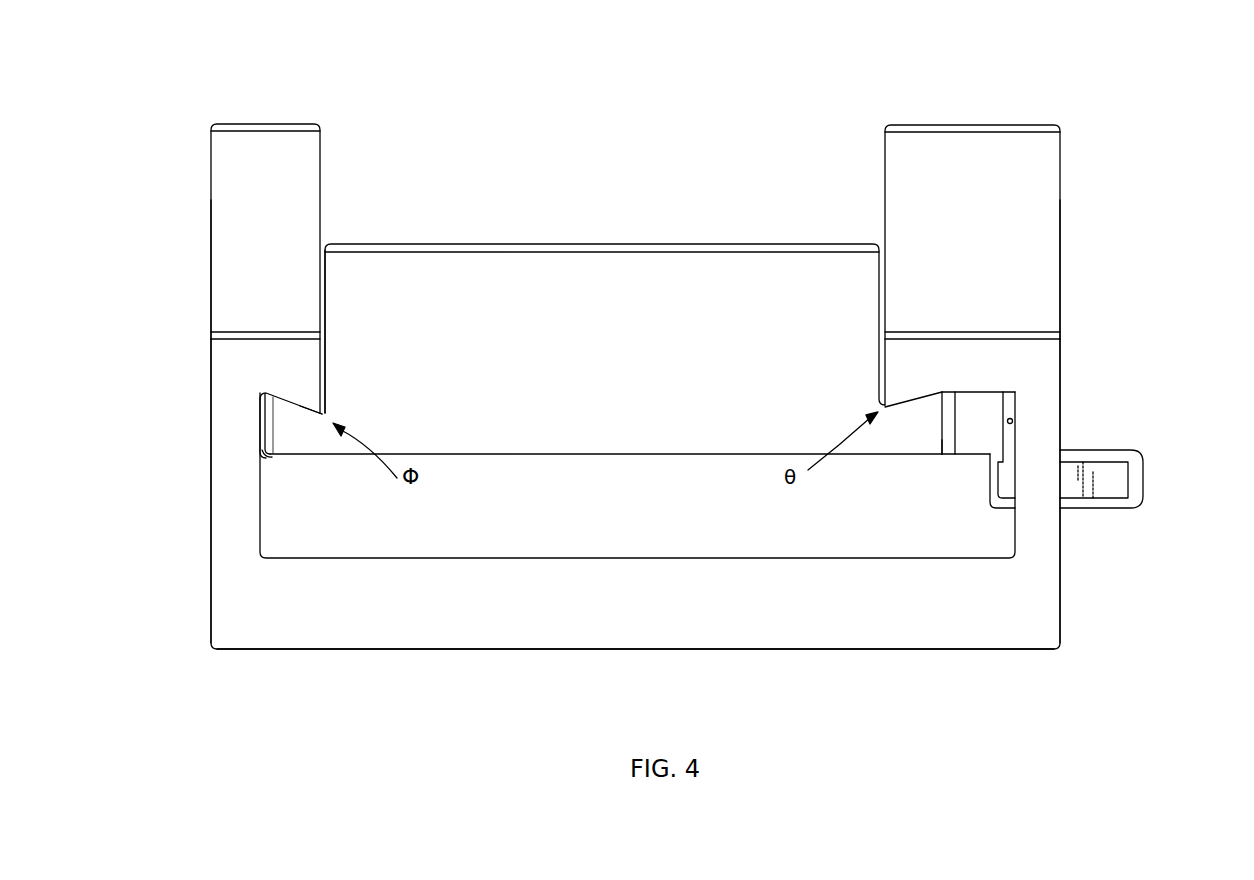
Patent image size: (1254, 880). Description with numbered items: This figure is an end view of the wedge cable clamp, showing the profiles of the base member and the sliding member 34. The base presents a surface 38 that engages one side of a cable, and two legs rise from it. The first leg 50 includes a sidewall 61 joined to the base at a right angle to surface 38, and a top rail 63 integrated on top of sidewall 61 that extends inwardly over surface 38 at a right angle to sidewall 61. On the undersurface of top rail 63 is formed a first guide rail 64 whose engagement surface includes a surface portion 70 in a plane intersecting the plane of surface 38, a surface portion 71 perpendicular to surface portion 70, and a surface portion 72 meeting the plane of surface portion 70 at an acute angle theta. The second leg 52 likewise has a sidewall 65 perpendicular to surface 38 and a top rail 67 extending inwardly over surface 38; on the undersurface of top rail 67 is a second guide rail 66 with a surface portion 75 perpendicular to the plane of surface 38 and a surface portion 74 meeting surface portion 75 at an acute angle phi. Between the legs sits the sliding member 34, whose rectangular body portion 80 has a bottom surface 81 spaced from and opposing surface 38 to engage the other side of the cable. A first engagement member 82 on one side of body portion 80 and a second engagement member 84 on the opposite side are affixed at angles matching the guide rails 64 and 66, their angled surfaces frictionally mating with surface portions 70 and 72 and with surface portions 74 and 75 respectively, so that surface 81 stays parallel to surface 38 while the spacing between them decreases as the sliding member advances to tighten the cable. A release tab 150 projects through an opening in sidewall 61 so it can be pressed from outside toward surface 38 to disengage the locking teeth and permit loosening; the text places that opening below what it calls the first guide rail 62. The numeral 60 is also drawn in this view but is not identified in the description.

The sliding member 34 is at (686, 232).
The surface 38 is at (625, 556).
The first leg 50 is at (1090, 186).
The second leg 52 is at (198, 188).
The base 60 is at (1002, 630).
The sidewall 61 is at (1048, 441).
The first guide rail 62 is at (270, 617).
The top rail 63 is at (978, 125).
The first guide rail 64 is at (985, 382).
The sidewall 65 is at (212, 576).
The second guide rail 66 is at (289, 385).
The top rail 67 is at (262, 123).
The surface portion 70 is at (1014, 421).
The surface portion 71 is at (986, 392).
The surface portion 72 is at (884, 400).
The surface portion 74 is at (324, 410).
The surface portion 75 is at (263, 431).
The body portion 80 is at (407, 282).
The bottom surface 81 is at (632, 445).
The first engagement member 82 is at (940, 476).
The second engagement member 84 is at (302, 472).
The release tab 150 is at (1140, 480).